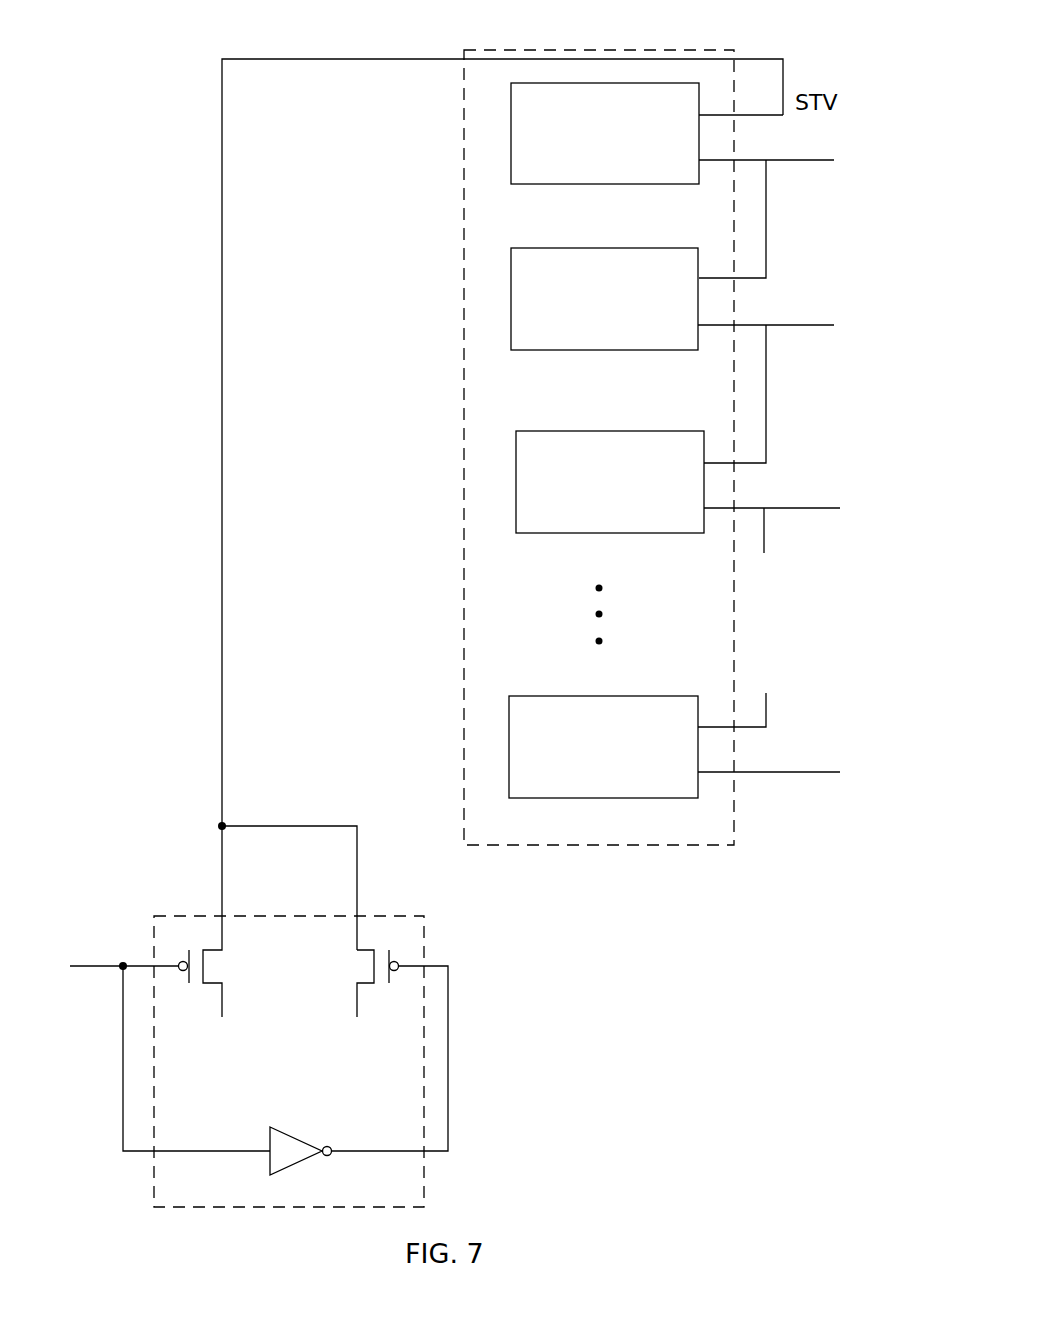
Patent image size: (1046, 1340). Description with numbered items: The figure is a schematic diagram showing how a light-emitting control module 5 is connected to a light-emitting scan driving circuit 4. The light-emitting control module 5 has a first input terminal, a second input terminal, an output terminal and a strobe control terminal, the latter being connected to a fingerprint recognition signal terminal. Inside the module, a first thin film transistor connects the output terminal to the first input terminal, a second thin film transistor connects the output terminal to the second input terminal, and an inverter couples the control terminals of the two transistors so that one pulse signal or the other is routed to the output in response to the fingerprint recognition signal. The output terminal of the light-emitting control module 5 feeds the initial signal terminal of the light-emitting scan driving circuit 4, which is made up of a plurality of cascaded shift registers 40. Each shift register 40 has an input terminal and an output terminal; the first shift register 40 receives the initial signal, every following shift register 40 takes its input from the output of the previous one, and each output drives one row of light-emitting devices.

The light-emitting scan driving circuit 4 is at (734, 815).
The shift register 40 is at (607, 108).
The light-emitting control module 5 is at (424, 1190).